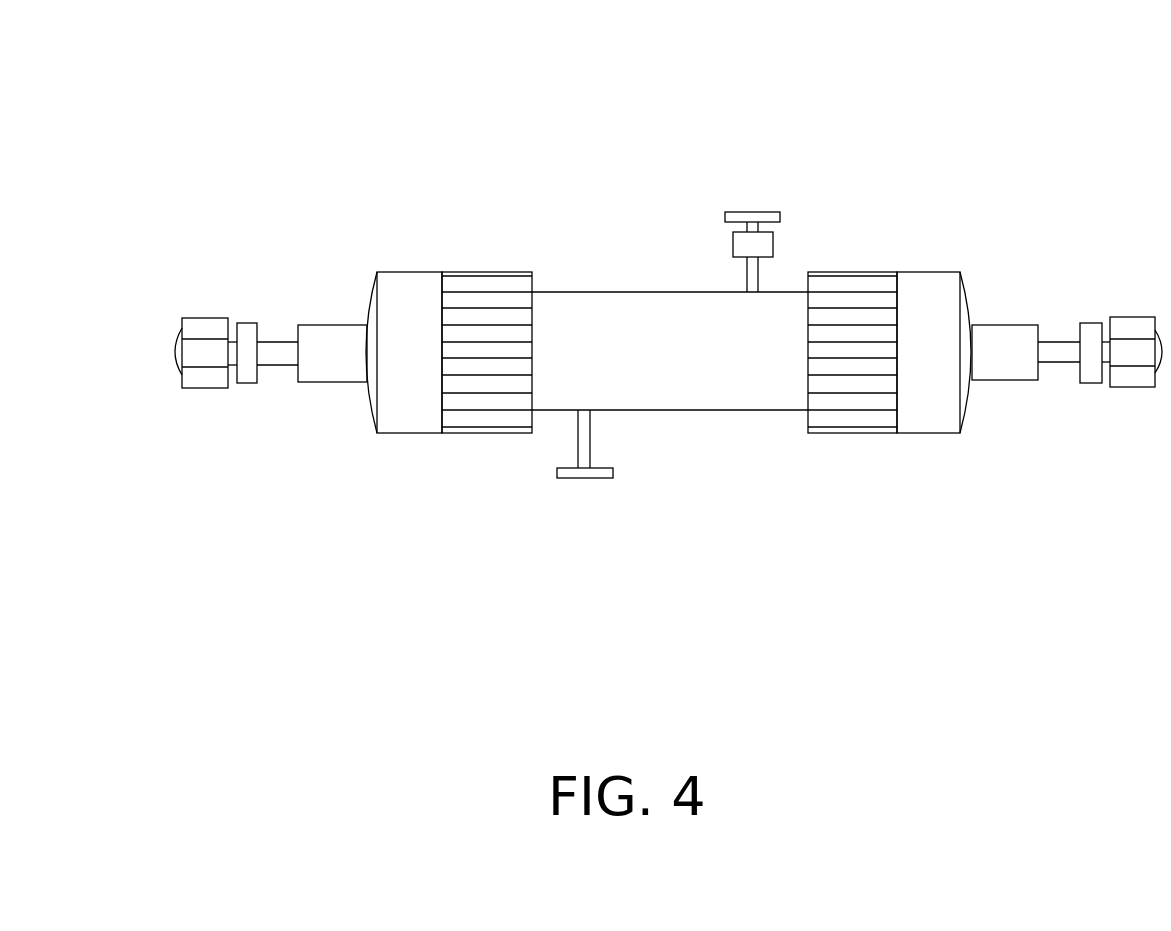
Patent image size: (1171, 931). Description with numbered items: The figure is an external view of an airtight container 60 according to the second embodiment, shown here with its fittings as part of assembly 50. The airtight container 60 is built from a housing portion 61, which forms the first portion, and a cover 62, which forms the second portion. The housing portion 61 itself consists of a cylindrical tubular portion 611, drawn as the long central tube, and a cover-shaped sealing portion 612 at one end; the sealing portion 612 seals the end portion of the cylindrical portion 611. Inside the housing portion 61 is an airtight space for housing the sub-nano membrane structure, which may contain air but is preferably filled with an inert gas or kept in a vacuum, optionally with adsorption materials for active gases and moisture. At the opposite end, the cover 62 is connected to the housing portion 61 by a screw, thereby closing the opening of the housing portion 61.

The filter device 50 is at (298, 185).
The airtight container 60 is at (525, 467).
The housing portion 61 is at (595, 153).
The cylindrical tubular portion 611 is at (594, 300).
The sealing portion 612 is at (422, 300).
The cover 62 is at (925, 297).